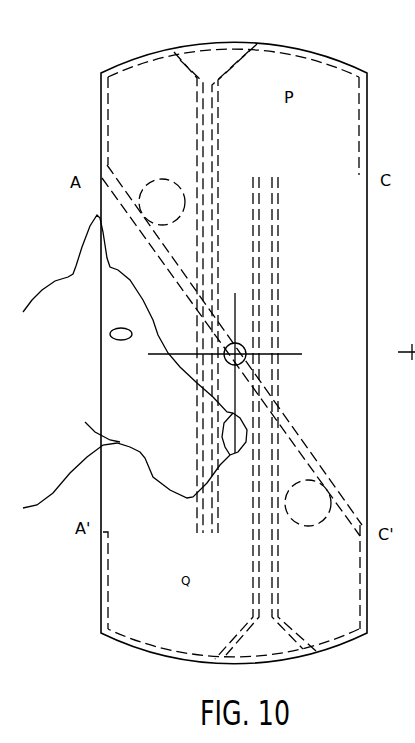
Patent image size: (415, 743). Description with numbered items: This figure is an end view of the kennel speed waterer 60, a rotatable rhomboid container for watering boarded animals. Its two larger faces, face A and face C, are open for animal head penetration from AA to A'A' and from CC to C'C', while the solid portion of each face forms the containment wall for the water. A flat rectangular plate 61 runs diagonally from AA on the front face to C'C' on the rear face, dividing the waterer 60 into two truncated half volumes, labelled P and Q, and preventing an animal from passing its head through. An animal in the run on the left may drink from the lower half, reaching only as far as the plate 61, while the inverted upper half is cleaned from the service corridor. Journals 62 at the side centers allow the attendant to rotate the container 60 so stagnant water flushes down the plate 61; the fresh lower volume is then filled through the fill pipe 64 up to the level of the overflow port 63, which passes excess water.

The kennel speed waterer 60 is at (106, 416).
The flat rectangular plate 61 is at (287, 419).
The journals 62 is at (246, 347).
The overflow port 63 is at (168, 180).
The fill pipe 64 is at (187, 45).